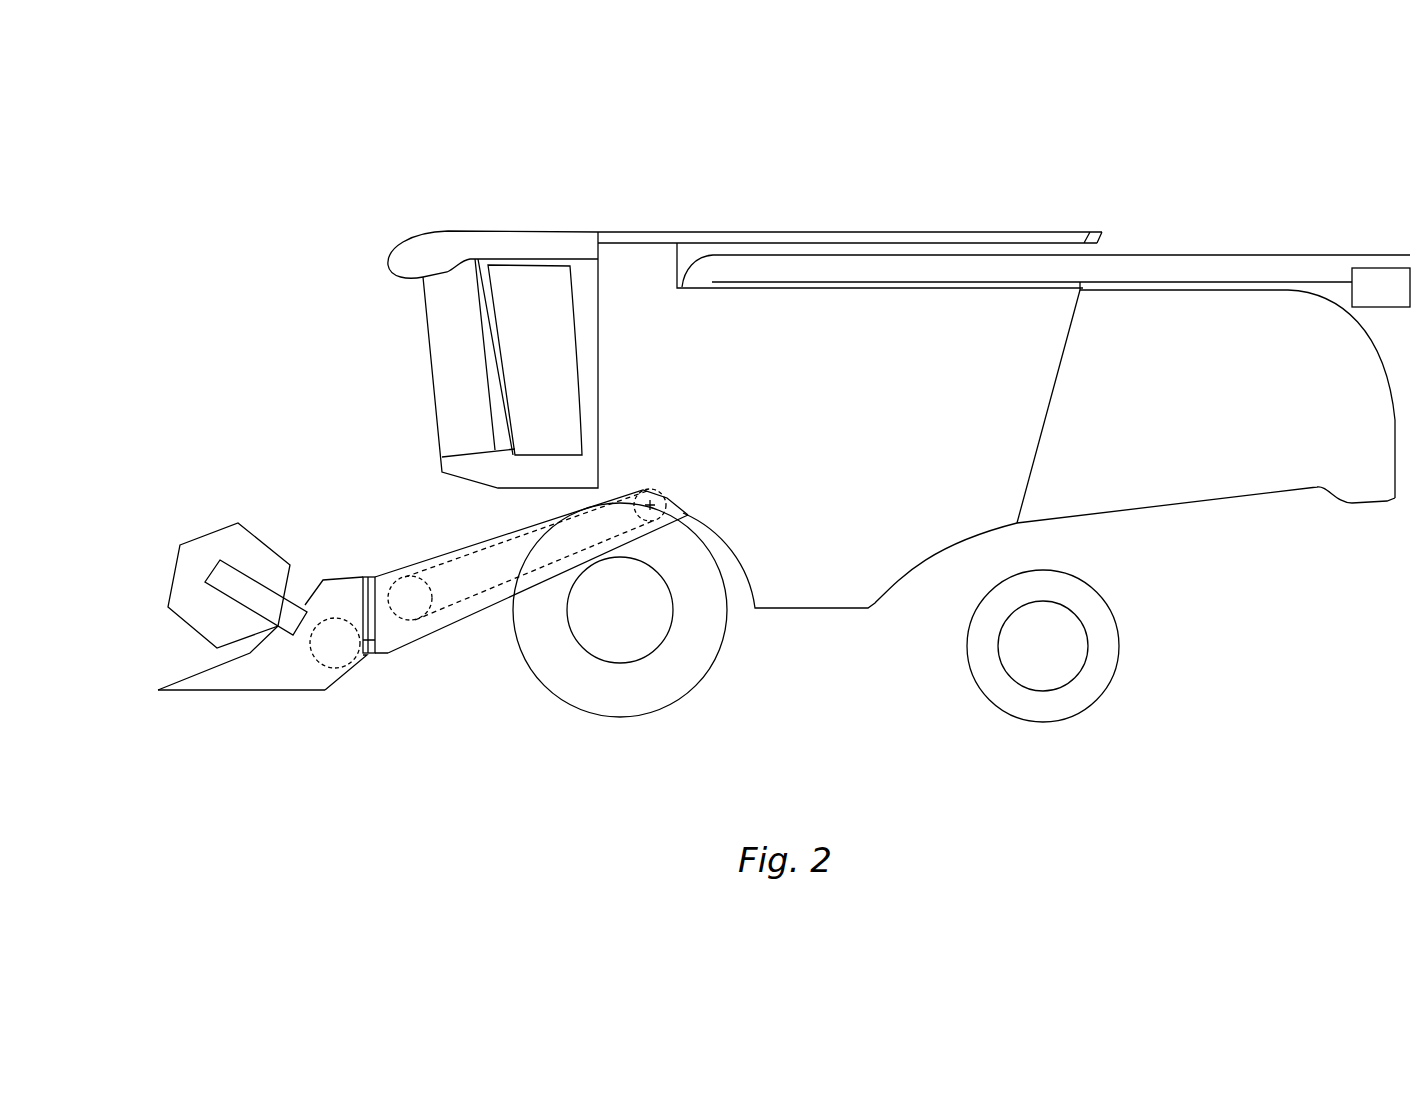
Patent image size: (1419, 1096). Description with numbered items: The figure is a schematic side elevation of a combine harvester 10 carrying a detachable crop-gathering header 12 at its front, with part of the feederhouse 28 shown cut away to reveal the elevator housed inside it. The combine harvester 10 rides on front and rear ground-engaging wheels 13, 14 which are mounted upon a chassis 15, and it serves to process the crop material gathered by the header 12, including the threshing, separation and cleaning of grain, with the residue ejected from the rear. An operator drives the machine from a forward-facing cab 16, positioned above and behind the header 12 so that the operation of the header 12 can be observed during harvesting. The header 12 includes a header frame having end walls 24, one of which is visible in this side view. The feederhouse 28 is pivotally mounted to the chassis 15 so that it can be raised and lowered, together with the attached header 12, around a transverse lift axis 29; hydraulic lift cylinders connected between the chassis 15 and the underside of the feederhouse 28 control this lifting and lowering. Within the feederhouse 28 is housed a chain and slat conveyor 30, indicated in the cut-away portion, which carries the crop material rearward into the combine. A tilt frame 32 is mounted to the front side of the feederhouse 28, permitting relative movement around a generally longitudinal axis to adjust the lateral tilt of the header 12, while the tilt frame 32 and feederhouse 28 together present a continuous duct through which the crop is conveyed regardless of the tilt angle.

The combine harvester 10 is at (1148, 138).
The crop-gathering header 12 is at (258, 692).
The front ground-engaging wheels 13 is at (573, 692).
The rear ground-engaging wheels 14 is at (1022, 702).
The chassis 15 is at (823, 583).
The cab 16 is at (502, 240).
The end walls 24 is at (298, 667).
The feederhouse 28 is at (450, 618).
The transverse lift axis 29 is at (658, 498).
The chain and slat conveyor 30 is at (453, 558).
The tilt frame 32 is at (368, 575).